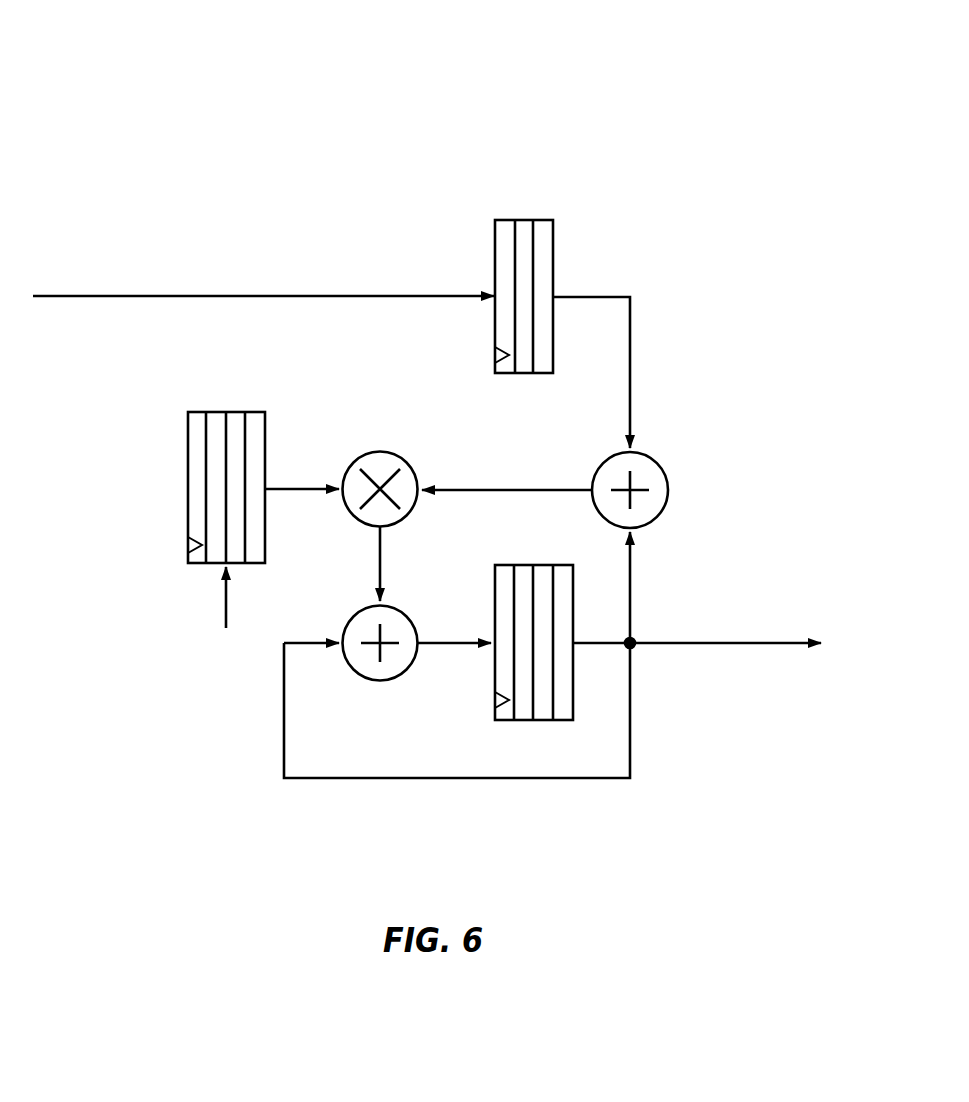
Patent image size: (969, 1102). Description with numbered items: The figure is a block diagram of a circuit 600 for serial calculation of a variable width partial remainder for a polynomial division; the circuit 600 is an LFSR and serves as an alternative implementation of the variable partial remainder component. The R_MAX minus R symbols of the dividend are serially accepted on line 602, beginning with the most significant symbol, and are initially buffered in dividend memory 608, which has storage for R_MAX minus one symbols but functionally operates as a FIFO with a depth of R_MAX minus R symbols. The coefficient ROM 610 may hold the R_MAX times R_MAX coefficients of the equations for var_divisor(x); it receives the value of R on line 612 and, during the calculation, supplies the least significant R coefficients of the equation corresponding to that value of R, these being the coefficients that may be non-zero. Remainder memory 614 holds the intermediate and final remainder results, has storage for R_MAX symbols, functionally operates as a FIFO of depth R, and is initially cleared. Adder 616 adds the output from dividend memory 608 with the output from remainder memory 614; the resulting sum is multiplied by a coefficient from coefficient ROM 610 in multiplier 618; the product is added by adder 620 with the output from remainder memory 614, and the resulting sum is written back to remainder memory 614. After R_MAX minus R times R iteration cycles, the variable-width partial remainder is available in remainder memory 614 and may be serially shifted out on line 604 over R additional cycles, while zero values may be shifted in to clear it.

The circuit 600 is at (153, 63).
The line 602 is at (93, 297).
The line 604 is at (768, 642).
The dividend memory 608 is at (553, 277).
The coefficient ROM 610 is at (188, 470).
The line 612 is at (226, 598).
The remainder memory 614 is at (495, 620).
The adder 616 is at (668, 489).
The multiplier 618 is at (385, 451).
The adder 620 is at (365, 680).